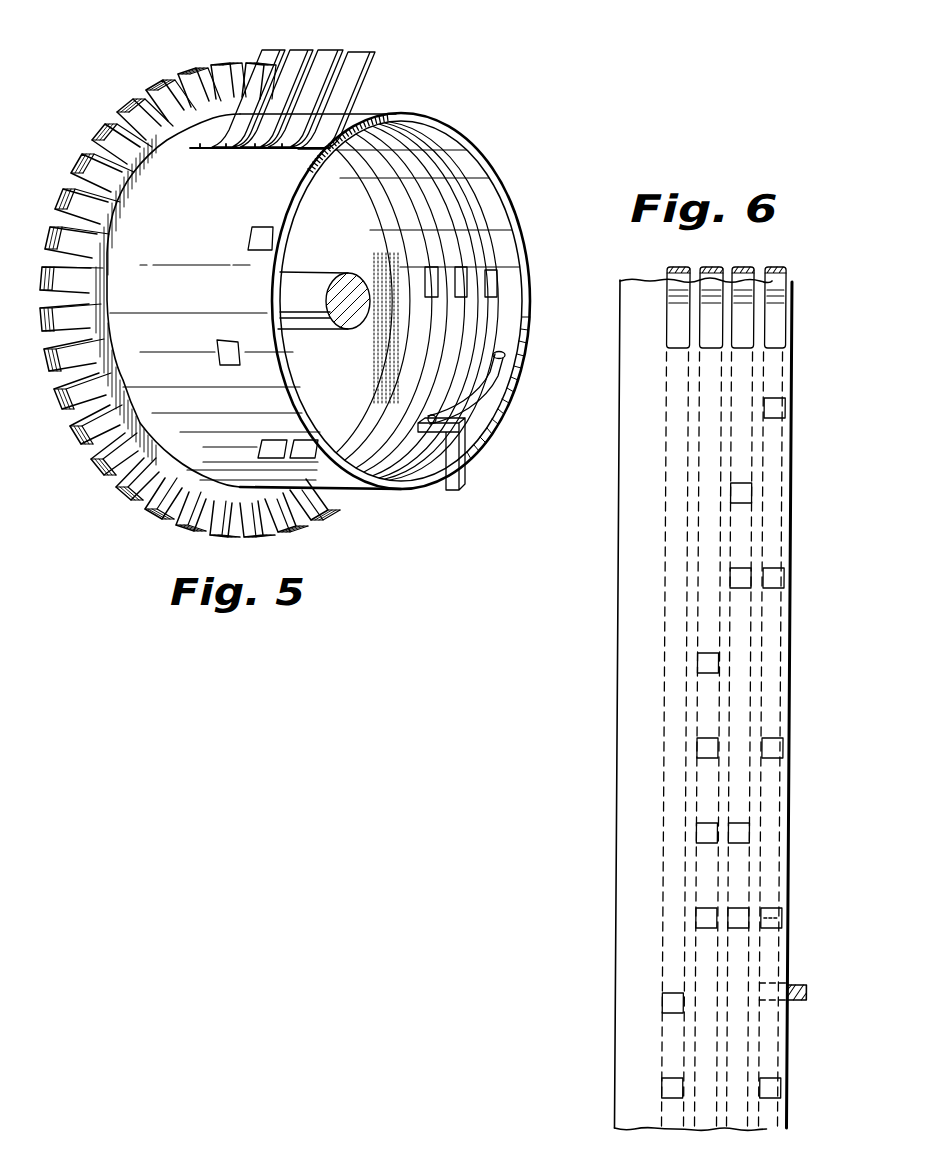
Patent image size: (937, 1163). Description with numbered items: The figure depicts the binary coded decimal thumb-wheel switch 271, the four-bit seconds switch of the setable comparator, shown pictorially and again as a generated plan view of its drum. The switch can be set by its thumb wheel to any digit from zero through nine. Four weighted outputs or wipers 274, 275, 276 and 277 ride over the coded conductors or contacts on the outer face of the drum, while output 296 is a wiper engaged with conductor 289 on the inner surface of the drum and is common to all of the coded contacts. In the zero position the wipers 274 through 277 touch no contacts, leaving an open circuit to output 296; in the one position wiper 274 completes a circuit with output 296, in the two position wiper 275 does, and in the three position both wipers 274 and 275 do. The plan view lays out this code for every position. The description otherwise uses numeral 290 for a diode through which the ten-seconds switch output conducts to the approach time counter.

In FIG. 5, the BCD thumb-wheel switch 271 is at (492, 130).
In FIG. 6, the BCD thumb-wheel switch 271 is at (604, 680).
In FIG. 5, the wiper 274 is at (375, 51).
In FIG. 6, the wiper 274 is at (780, 268).
In FIG. 5, the wiper 275 is at (340, 48).
In FIG. 6, the wiper 275 is at (750, 268).
In FIG. 5, the wiper 276 is at (305, 48).
In FIG. 6, the wiper 276 is at (712, 268).
In FIG. 5, the wiper 277 is at (275, 48).
In FIG. 6, the wiper 277 is at (673, 268).
In FIG. 5, the conductor 289 is at (480, 295).
In FIG. 6, the conductor 289 is at (665, 545).
In FIG. 5, the diode 290 is at (513, 210).
In FIG. 6, the diode 290 is at (620, 621).
In FIG. 5, the output 296 is at (466, 480).
In FIG. 6, the output 296 is at (810, 987).